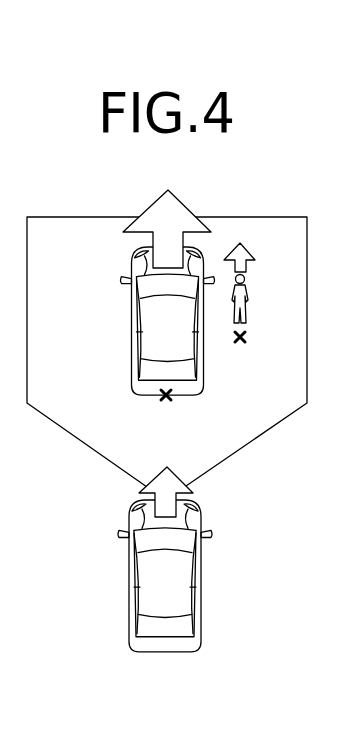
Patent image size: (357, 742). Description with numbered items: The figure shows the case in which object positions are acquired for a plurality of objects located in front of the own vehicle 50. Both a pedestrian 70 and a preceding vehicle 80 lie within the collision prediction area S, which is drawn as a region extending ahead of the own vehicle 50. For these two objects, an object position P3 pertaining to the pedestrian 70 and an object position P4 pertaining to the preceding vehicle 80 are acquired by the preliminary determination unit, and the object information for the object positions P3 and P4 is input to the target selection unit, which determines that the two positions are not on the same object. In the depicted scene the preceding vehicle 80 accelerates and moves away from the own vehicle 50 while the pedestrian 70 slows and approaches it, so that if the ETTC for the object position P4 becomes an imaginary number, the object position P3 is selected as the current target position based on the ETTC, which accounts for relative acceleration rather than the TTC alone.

The collision prediction area S is at (53, 216).
The preceding vehicle 80 is at (128, 355).
The own vehicle 50 is at (127, 619).
The pedestrian 70 is at (247, 285).
The object position P3 is at (244, 341).
The object position P4 is at (163, 401).